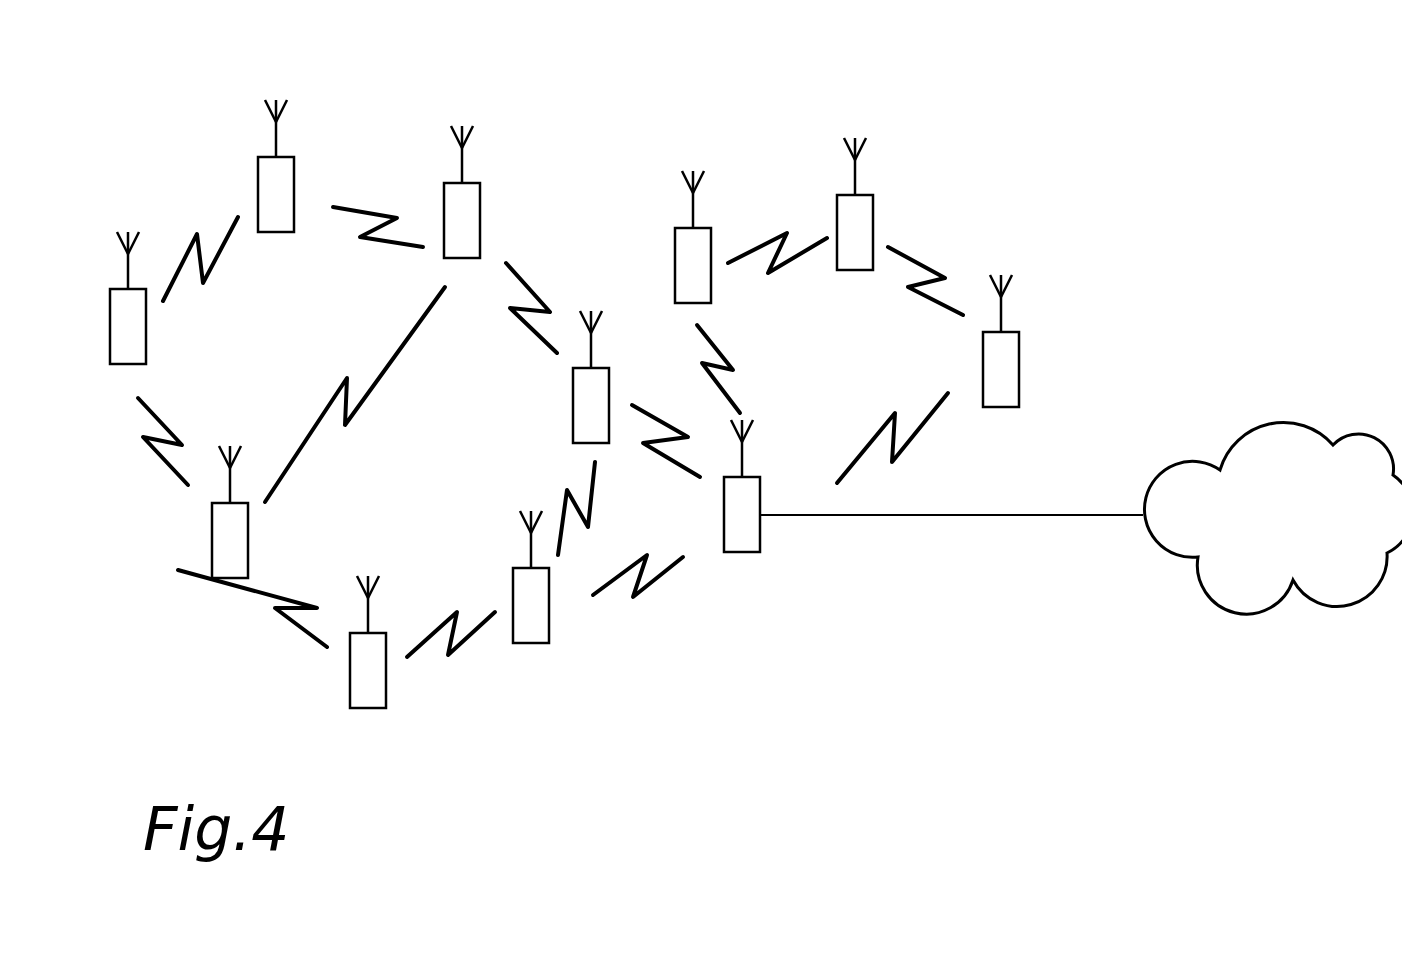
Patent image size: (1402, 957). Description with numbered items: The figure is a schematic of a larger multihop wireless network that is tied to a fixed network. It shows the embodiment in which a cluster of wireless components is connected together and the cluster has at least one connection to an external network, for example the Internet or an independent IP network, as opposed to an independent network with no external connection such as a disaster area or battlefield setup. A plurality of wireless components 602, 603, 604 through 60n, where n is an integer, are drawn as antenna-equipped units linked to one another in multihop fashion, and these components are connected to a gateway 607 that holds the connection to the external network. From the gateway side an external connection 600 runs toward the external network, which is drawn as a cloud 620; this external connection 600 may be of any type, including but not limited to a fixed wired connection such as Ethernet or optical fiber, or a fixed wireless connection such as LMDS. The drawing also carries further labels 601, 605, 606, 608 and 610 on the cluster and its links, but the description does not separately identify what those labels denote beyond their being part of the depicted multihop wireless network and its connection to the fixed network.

The mesh network of wireless nodes 610 is at (522, 138).
The wireless component 60n is at (368, 693).
The gateway wireless node 601 is at (748, 537).
The wireless component 602 is at (688, 267).
The wireless component 603 is at (847, 217).
The wireless component 604 is at (1002, 363).
The wireless link 605 is at (730, 350).
The wireless link 606 is at (800, 255).
The gateway 607 is at (927, 427).
The wireless link 608 is at (923, 255).
The external connection 600 is at (1043, 517).
The network cloud 620 is at (1316, 532).